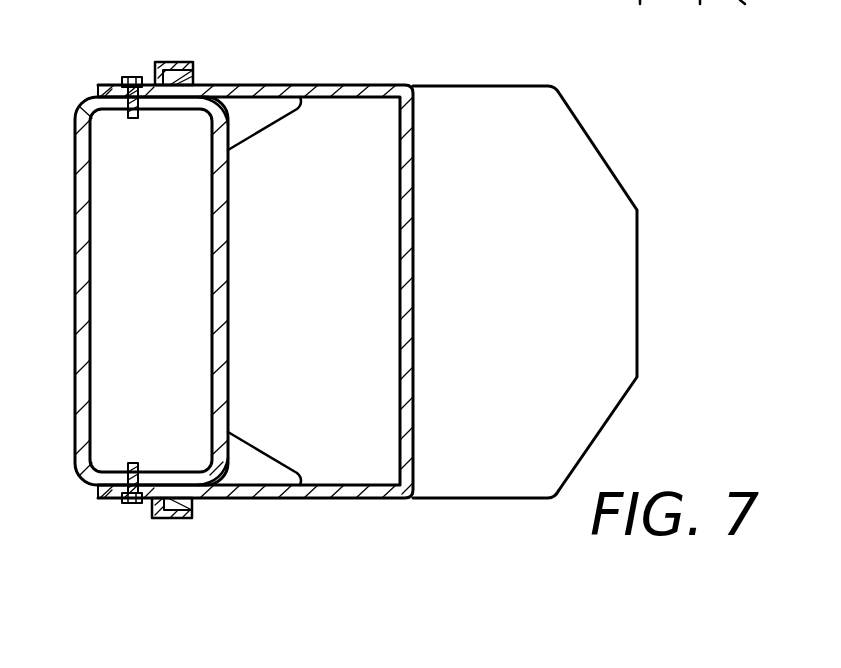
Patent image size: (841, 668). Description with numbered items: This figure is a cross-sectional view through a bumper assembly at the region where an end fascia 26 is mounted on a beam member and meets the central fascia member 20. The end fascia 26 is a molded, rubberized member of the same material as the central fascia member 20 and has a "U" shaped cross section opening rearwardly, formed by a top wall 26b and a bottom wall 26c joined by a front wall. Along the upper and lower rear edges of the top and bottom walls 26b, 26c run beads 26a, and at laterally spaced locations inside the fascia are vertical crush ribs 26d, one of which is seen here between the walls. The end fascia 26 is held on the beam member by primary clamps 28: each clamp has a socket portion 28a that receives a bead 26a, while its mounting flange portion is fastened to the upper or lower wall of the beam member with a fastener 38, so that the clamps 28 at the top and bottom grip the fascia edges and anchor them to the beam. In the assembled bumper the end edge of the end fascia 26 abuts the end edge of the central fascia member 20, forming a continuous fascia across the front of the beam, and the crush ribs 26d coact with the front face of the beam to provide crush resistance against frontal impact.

The central fascia member 20 is at (638, 237).
The end fascia 26 is at (415, 206).
The bead 26a is at (198, 72).
The top wall 26b is at (355, 85).
The bottom wall 26c is at (340, 498).
The crush rib 26d is at (320, 258).
The primary clamp 28 is at (101, 82).
The socket portion 28a is at (170, 62).
The fastener 38 is at (132, 119).